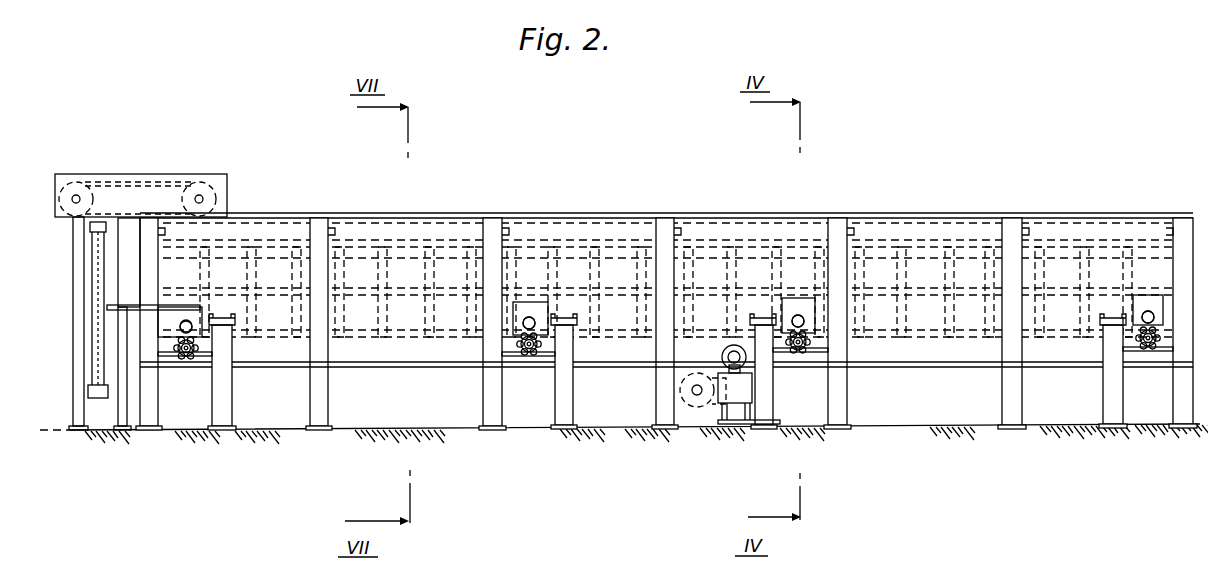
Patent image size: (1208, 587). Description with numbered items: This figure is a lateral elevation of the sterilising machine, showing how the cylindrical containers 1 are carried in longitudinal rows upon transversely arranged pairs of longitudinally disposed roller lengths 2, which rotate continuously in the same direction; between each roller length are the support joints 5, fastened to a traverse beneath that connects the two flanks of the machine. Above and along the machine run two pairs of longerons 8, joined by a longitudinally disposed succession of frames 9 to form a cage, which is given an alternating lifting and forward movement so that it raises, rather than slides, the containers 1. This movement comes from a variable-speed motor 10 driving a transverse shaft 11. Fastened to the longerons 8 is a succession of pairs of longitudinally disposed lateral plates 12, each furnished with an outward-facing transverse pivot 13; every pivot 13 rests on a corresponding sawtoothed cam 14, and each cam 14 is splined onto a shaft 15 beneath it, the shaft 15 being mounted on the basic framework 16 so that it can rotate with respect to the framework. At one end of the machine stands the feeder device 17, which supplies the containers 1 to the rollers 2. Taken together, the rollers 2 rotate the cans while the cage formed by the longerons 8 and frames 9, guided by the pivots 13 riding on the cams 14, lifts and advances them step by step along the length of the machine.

The cylindrical containers 1 is at (425, 213).
The roller lengths 2 is at (580, 215).
The support joints 5 is at (490, 222).
The longerons 8 is at (755, 238).
The frames 9 is at (376, 254).
The variable-speed motor 10 is at (733, 345).
The transverse shaft 11 is at (696, 396).
The lateral plates 12 is at (810, 308).
The transverse pivots 13 is at (187, 320).
The sawtoothed cam 14 is at (186, 358).
The shaft 15 is at (198, 349).
The basic framework 16 is at (568, 407).
The feeder device 17 is at (182, 169).